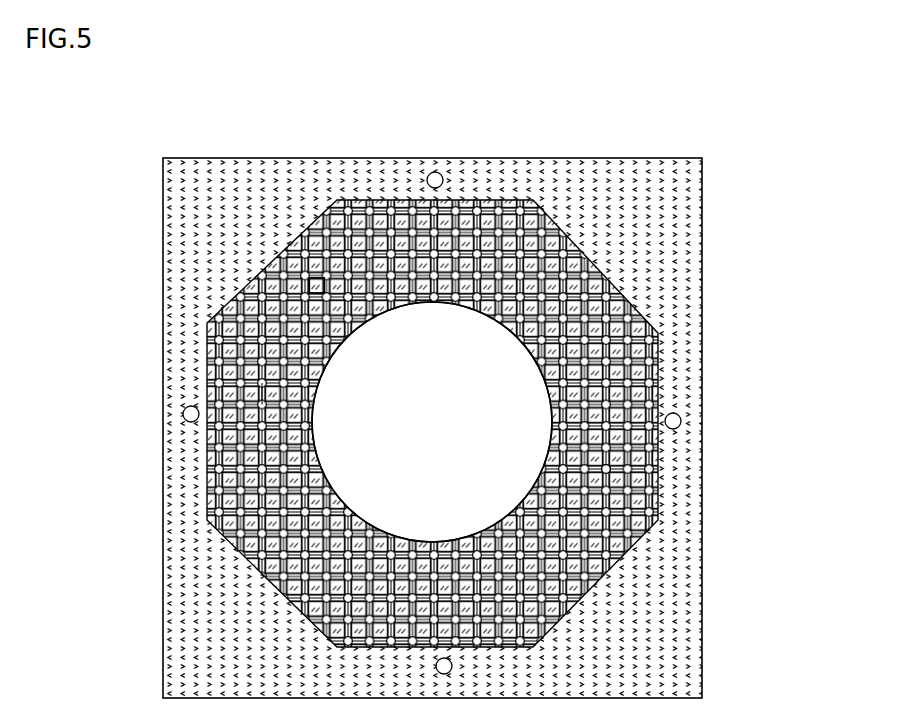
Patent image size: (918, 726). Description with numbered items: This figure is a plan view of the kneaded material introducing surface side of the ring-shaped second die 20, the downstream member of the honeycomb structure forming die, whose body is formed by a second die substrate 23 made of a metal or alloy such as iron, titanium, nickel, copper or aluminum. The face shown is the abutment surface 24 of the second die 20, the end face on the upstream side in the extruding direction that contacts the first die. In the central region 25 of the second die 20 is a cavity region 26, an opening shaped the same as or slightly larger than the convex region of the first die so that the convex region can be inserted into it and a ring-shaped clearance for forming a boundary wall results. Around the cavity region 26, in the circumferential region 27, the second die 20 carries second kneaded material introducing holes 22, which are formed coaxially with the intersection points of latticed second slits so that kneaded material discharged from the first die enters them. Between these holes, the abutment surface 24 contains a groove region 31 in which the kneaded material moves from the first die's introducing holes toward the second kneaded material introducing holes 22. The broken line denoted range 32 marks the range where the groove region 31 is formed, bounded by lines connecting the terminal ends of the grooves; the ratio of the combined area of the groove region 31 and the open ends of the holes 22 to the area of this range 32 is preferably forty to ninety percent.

The second die 20 is at (757, 103).
The second kneaded material introducing hole 22 is at (603, 467).
The second die substrate 23 is at (633, 257).
The abutment surface 24 is at (317, 285).
The central region 25 is at (342, 382).
The cavity region 26 is at (473, 333).
The circumferential region 27 is at (263, 402).
The groove region 31 is at (603, 352).
The range where the groove region is formed 32 is at (650, 527).